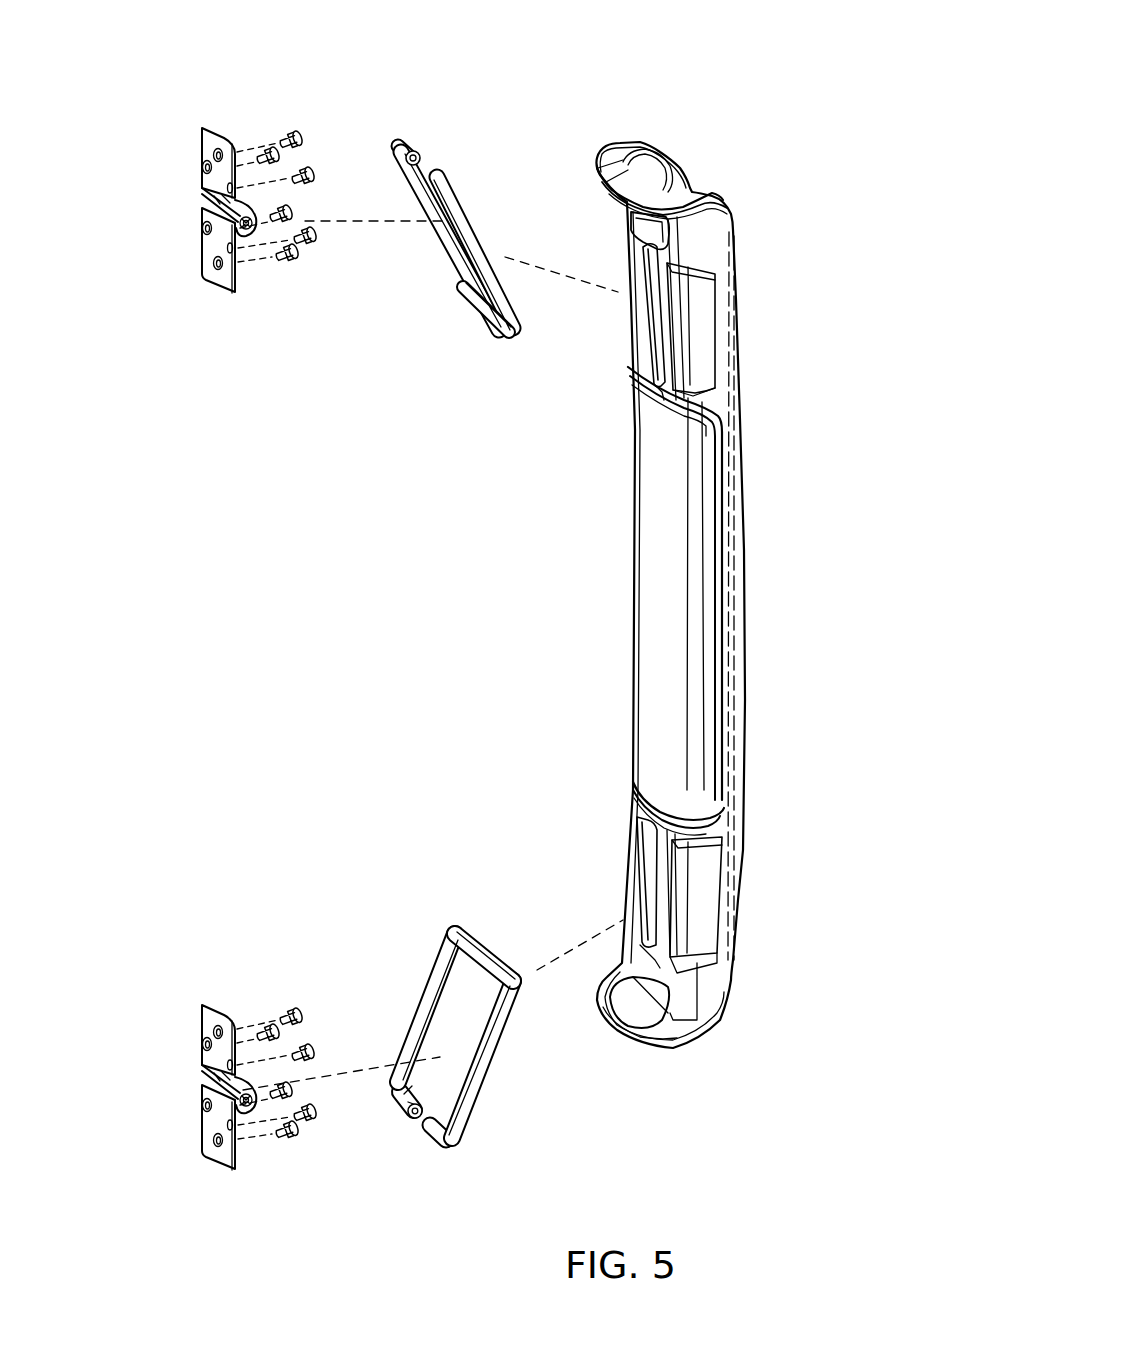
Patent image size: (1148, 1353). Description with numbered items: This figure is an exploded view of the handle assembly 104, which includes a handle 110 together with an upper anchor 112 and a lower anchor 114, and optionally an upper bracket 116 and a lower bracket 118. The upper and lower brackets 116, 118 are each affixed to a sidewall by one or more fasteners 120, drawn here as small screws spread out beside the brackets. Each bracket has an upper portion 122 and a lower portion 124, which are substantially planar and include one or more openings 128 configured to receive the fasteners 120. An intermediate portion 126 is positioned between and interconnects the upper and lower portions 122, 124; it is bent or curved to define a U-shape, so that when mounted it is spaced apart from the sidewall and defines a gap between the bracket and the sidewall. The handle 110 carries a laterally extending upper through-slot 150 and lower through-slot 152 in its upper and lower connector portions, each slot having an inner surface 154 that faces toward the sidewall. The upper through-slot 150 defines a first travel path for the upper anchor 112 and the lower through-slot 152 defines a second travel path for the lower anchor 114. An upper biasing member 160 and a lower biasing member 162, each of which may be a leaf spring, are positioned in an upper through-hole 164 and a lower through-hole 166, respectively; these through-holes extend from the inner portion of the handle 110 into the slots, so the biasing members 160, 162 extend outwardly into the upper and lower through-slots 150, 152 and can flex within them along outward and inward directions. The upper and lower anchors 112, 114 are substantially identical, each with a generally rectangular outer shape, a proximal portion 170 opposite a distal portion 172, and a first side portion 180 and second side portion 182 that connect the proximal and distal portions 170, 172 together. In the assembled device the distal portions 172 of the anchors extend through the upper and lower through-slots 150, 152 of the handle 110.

The handle assembly 104 is at (832, 126).
The handle 110 is at (741, 380).
The upper anchor 112 is at (452, 176).
The lower anchor 114 is at (470, 1108).
The upper bracket 116 is at (202, 130).
The lower bracket 118 is at (203, 1010).
The fasteners 120 is at (308, 133).
The upper portion 122 is at (218, 136).
The lower portion 124 is at (240, 282).
The intermediate portion 126 is at (216, 207).
The openings 128 is at (204, 168).
The upper through-slot 150 is at (702, 318).
The lower through-slot 152 is at (702, 870).
The inner surface 154 is at (712, 340).
The upper biasing member 160 is at (647, 338).
The lower biasing member 162 is at (652, 900).
The upper through-hole 164 is at (645, 306).
The lower through-hole 166 is at (648, 832).
The proximal portion 170 is at (410, 138).
The distal portion 172 is at (478, 307).
The first side portion 180 is at (480, 240).
The second side portion 182 is at (430, 230).